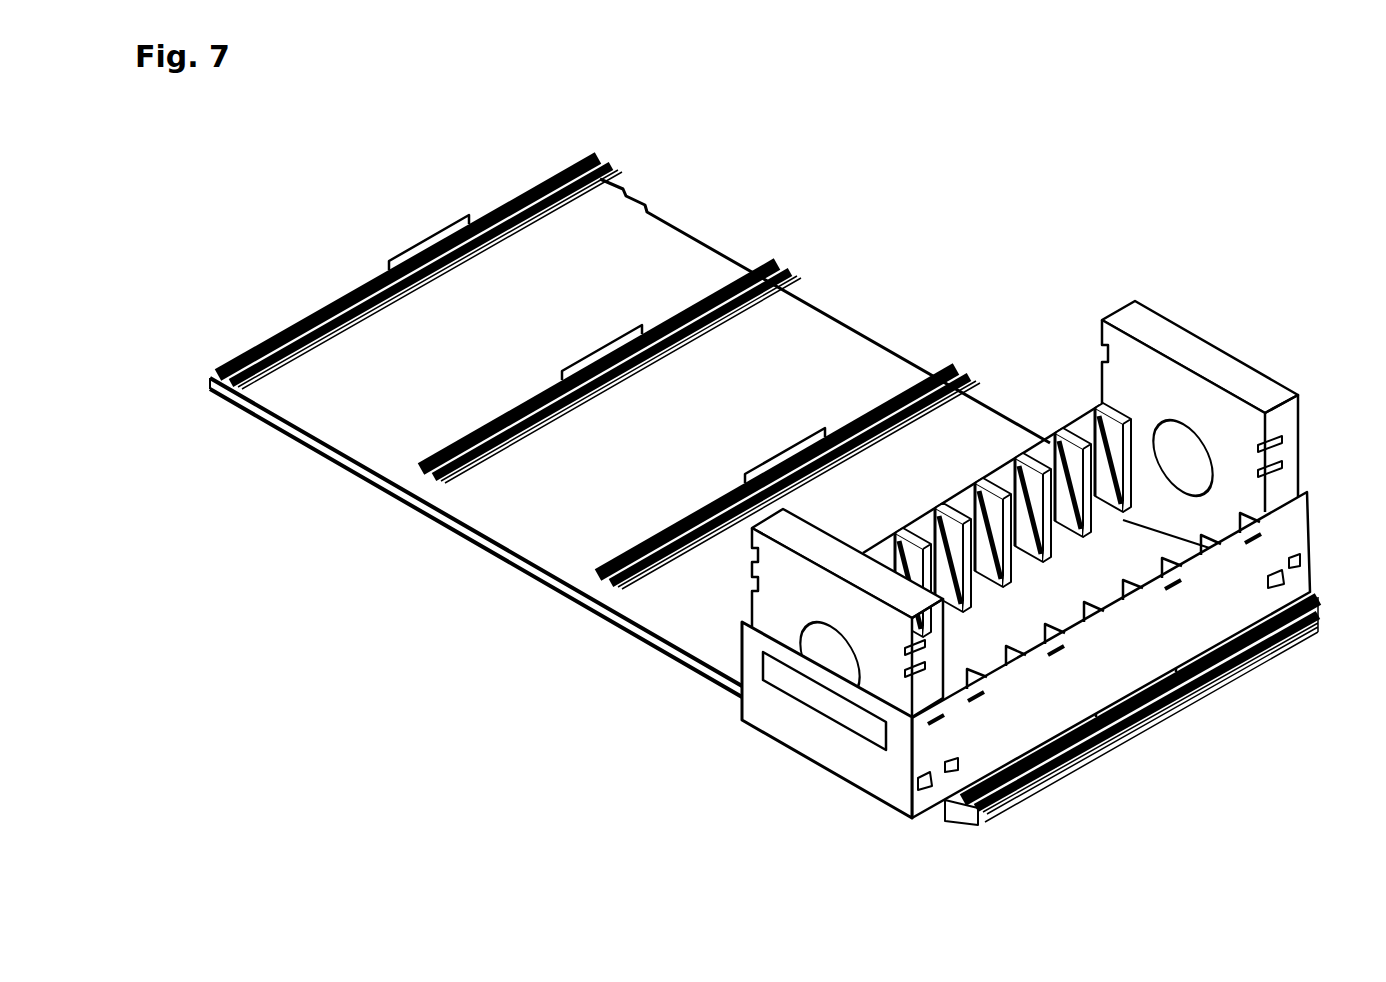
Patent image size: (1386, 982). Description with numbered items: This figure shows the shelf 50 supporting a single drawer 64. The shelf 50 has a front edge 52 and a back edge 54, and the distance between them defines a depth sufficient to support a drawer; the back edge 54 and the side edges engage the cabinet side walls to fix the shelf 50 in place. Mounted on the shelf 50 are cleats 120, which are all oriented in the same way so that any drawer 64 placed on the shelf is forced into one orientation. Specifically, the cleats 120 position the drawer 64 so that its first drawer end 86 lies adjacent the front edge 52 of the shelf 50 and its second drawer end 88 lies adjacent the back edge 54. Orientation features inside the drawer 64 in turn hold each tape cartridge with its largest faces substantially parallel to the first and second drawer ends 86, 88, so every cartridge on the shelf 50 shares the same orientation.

The shelf 50 is at (703, 185).
The front edge 52 is at (312, 453).
The back edge 54 is at (723, 247).
The cleat 120 is at (515, 182).
The drawer 64 is at (858, 808).
The first drawer end 86 is at (807, 727).
The second drawer end 88 is at (1308, 525).